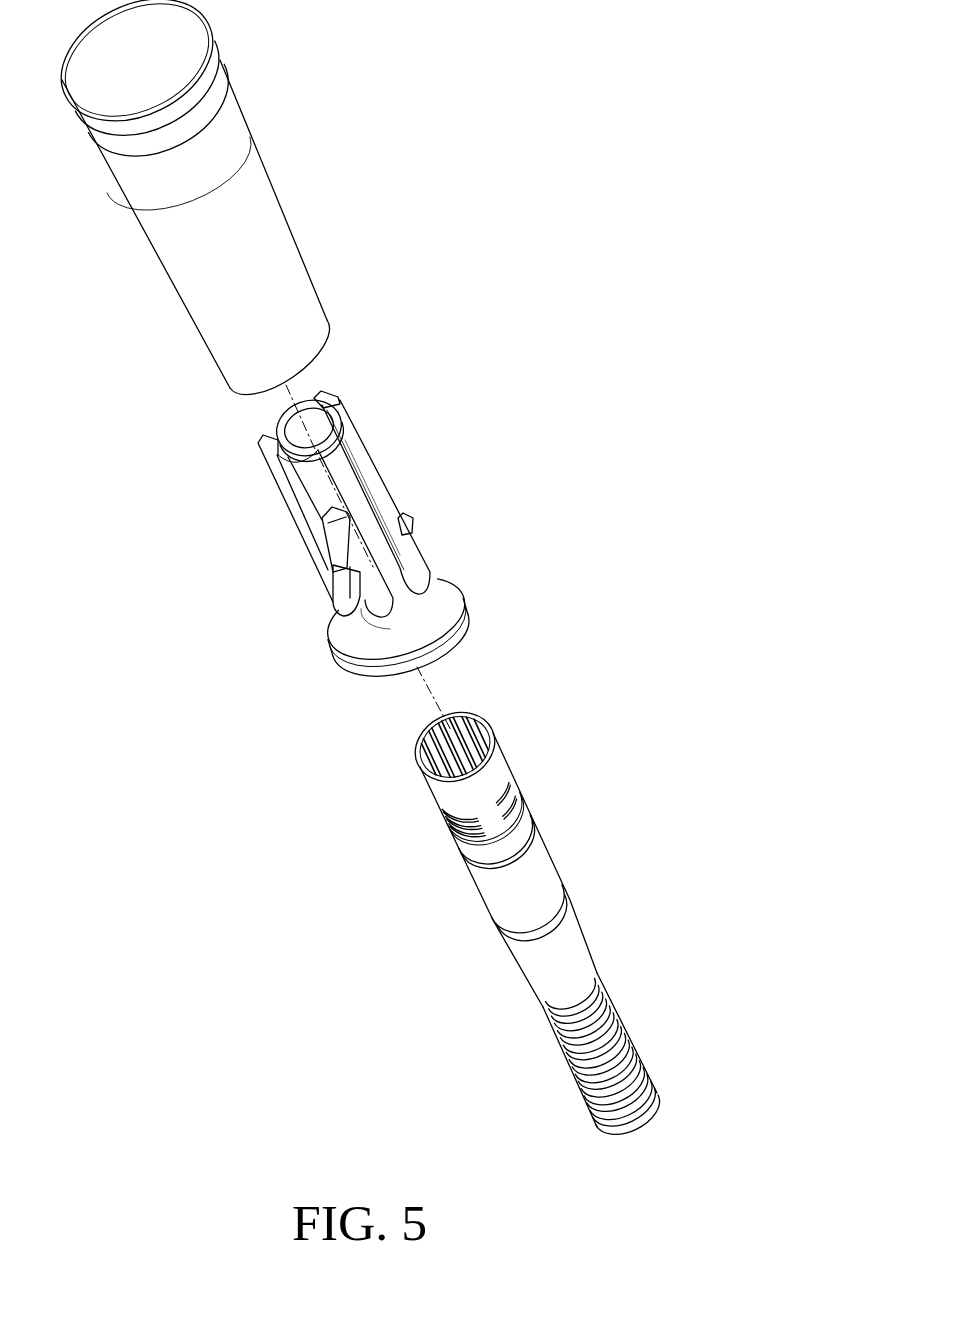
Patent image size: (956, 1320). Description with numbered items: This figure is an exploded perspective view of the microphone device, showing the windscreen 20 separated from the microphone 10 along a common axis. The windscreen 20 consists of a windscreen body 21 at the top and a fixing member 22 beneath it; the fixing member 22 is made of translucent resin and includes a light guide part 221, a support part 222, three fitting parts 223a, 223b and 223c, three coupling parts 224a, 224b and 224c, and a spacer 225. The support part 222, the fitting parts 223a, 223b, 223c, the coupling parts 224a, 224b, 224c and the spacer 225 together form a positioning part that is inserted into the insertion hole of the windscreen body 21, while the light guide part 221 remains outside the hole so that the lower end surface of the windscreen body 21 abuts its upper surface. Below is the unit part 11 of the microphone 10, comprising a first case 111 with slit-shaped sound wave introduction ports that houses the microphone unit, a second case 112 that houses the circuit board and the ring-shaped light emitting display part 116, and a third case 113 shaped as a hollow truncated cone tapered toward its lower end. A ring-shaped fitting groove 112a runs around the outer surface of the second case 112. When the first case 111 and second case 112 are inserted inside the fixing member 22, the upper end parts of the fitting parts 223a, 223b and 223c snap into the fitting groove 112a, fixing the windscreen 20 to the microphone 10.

The microphone 10 is at (529, 917).
The unit part 11 is at (529, 917).
The first case 111 is at (503, 754).
The second case 112 is at (553, 857).
The fitting groove 112a is at (463, 867).
The third case 113 is at (588, 940).
The light emitting display part 116 is at (505, 930).
The windscreen 20 is at (288, 353).
The windscreen body 21 is at (288, 205).
The fixing member 22 is at (363, 549).
The light guide part 221 is at (463, 596).
The support part 222 is at (363, 640).
The fitting part 223a is at (422, 537).
The fitting part 223b is at (337, 600).
The fitting part 223c is at (337, 538).
The coupling part 224a is at (372, 497).
The coupling part 224b is at (278, 492).
The coupling part 224c is at (352, 432).
The spacer 225 is at (288, 420).